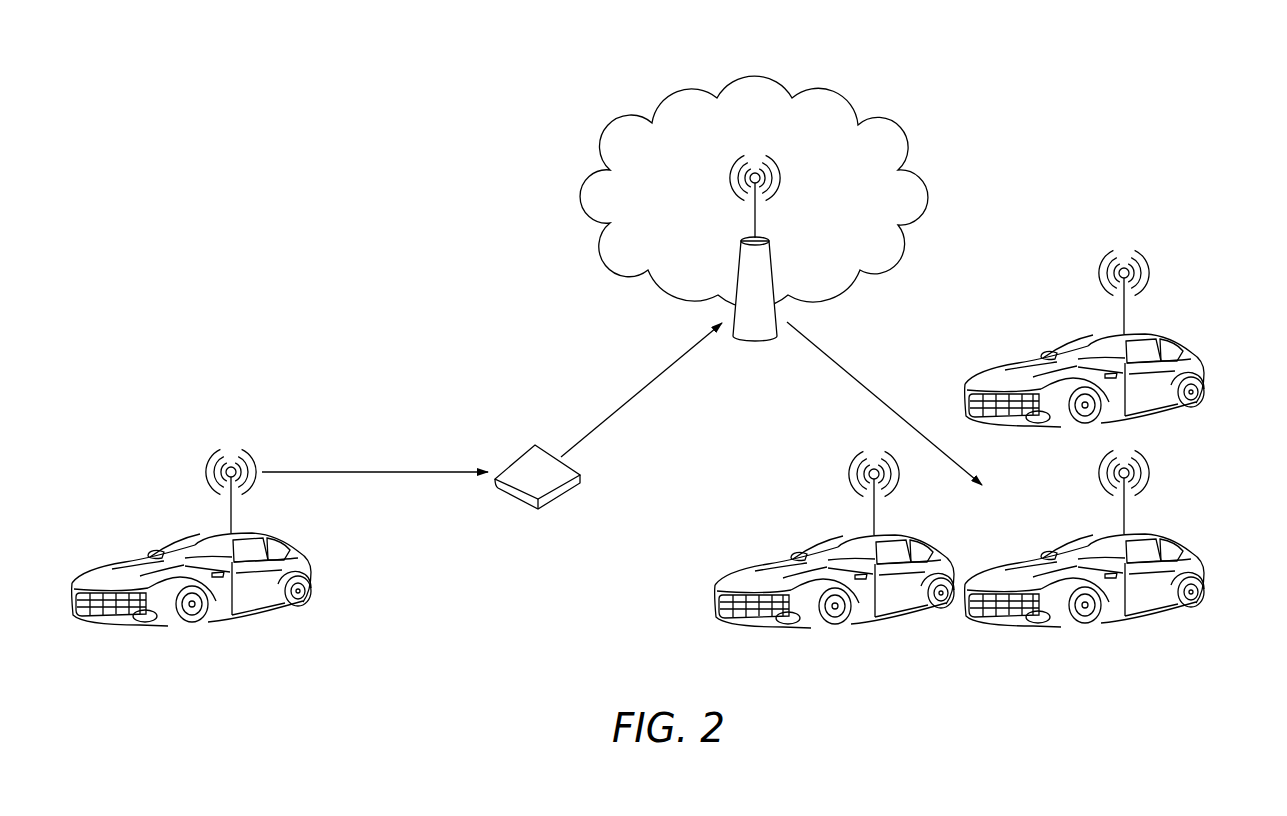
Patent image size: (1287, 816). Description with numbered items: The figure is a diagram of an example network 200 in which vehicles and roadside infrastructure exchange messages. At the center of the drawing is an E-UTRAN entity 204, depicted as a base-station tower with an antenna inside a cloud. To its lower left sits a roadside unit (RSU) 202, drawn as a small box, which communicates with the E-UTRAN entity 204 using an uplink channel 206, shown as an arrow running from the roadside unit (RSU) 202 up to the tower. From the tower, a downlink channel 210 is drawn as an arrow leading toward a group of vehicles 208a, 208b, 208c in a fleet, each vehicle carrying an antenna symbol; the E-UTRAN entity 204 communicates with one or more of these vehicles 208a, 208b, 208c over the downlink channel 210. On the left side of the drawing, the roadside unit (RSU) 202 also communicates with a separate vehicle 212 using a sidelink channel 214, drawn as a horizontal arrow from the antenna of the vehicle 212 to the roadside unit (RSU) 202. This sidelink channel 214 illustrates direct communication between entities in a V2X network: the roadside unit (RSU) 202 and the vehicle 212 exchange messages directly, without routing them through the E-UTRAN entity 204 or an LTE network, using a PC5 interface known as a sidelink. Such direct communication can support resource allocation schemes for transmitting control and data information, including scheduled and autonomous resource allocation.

The network 200 is at (1024, 87).
The roadside unit (RSU) 202 is at (520, 455).
The E-UTRAN entity 204 is at (737, 263).
The uplink channel 206 is at (630, 395).
The vehicle 208a is at (1160, 335).
The vehicle 208b is at (1163, 537).
The vehicle 208c is at (855, 537).
The downlink channel 210 is at (862, 382).
The vehicle 212 is at (203, 530).
The sidelink channel 214 is at (370, 470).